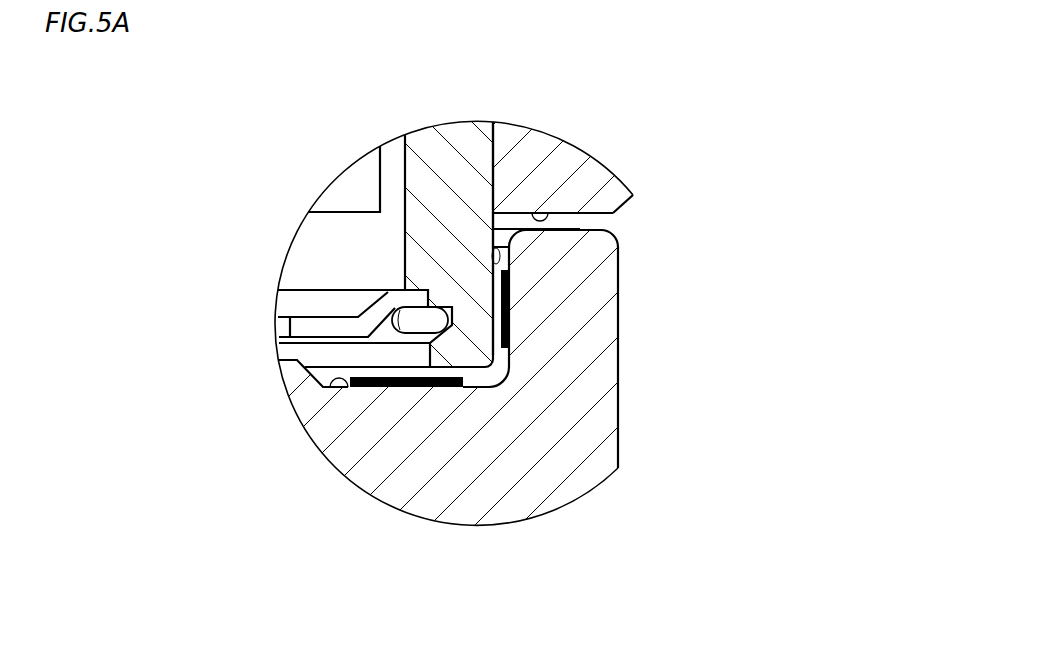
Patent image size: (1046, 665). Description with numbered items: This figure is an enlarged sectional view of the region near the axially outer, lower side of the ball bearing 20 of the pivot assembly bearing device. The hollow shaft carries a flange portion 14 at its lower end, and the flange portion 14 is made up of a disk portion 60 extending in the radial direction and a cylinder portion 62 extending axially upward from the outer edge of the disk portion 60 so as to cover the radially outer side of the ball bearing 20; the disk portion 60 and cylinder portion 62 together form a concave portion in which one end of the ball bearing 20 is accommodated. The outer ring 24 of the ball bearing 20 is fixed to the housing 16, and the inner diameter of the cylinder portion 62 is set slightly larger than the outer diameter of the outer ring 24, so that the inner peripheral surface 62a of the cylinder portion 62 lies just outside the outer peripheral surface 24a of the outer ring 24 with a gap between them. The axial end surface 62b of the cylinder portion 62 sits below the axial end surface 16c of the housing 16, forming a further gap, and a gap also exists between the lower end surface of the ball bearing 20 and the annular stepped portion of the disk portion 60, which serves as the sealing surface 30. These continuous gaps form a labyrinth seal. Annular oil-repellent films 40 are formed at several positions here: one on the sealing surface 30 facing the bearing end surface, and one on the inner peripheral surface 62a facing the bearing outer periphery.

The flange portion 14 is at (298, 415).
The housing 16 is at (585, 178).
The axial end surface of the housing 16c is at (600, 165).
The ball bearing 20 is at (517, 148).
The outer ring 24 is at (436, 128).
The outer peripheral surface of the outer ring 24a is at (493, 247).
The sealing surface 30 is at (332, 387).
The oil-repellent film 40 is at (513, 369).
The disk portion 60 is at (457, 478).
The cylinder portion 62 is at (590, 302).
The inner peripheral surface of the cylinder portion 62a is at (500, 236).
The axial end surface of the cylinder portion 62b is at (582, 228).